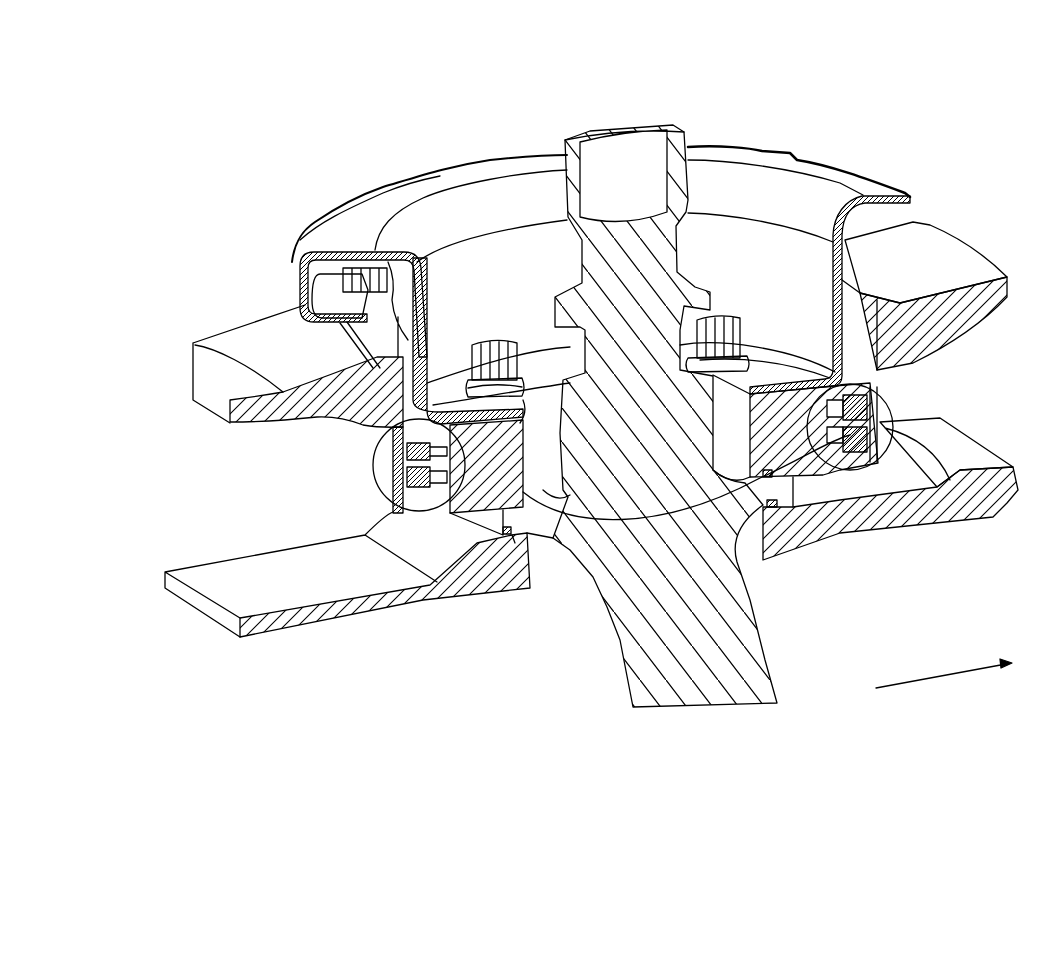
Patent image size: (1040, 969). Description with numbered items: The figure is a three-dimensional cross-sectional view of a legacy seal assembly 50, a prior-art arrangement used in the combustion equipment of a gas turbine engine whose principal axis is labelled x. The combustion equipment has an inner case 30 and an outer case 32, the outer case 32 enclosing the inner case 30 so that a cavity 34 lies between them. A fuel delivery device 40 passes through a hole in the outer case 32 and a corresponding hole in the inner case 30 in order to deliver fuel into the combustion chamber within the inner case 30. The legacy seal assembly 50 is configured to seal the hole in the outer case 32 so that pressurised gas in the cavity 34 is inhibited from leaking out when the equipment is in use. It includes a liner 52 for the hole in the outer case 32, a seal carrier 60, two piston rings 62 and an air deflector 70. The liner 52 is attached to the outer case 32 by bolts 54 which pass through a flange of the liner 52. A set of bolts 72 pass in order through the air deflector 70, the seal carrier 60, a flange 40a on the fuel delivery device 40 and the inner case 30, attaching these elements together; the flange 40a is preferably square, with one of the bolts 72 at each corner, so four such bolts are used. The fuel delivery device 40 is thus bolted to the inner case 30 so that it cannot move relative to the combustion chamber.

The legacy seal assembly 50 is at (308, 110).
The air deflector 70 is at (423, 173).
The bolts 54 is at (328, 260).
The outer case 32 is at (238, 338).
The cavity 34 is at (312, 487).
The bolts 72 is at (490, 343).
The liner 52 is at (870, 267).
The seal carrier 60 is at (523, 437).
The piston rings 62 is at (523, 485).
The fuel delivery device 40 is at (640, 678).
The flange 40a is at (520, 566).
The inner case 30 is at (266, 637).